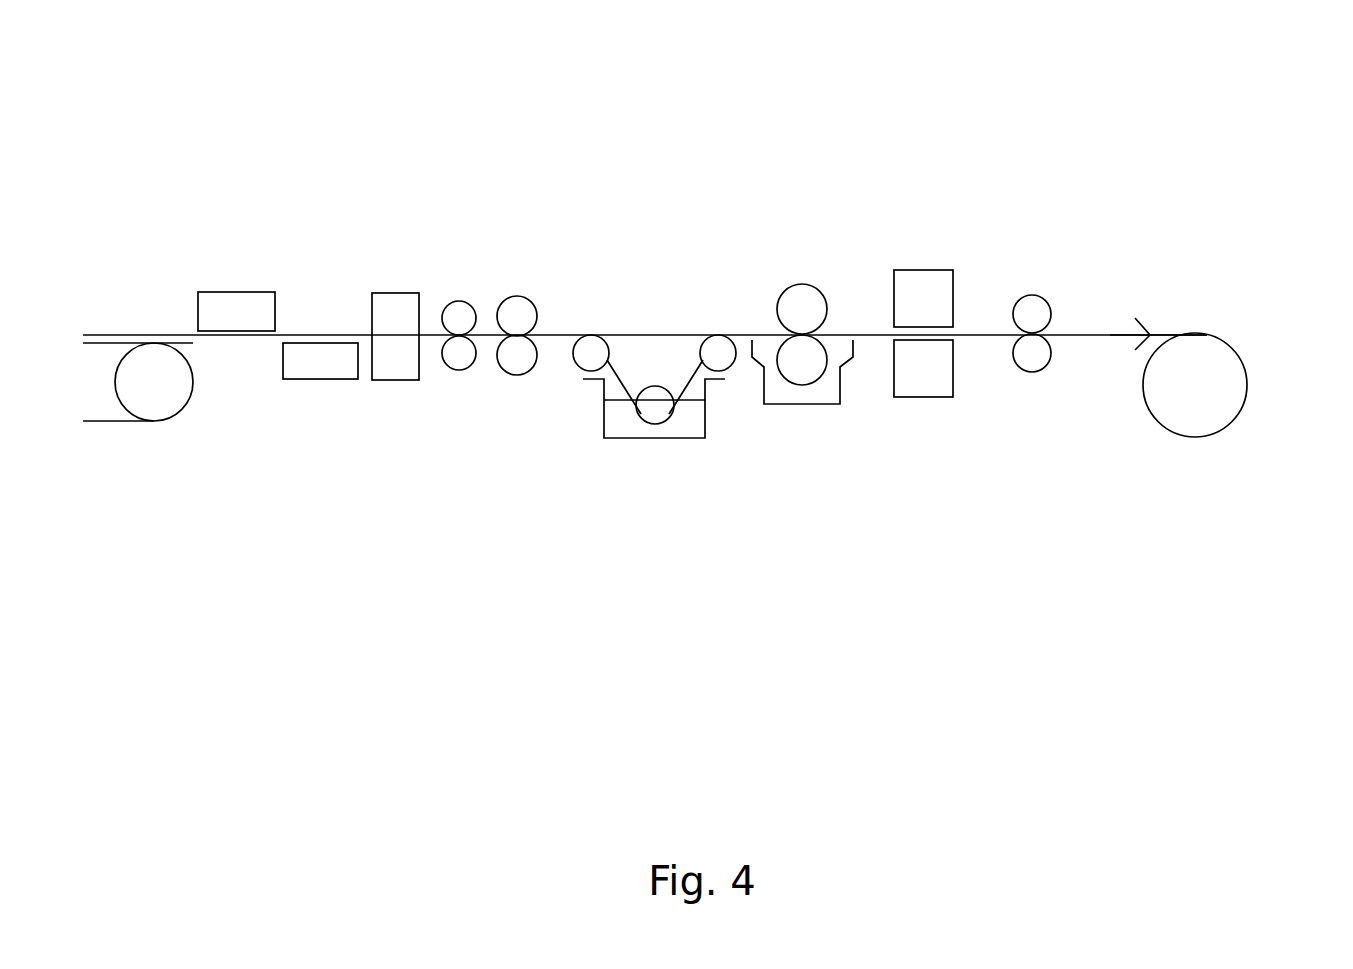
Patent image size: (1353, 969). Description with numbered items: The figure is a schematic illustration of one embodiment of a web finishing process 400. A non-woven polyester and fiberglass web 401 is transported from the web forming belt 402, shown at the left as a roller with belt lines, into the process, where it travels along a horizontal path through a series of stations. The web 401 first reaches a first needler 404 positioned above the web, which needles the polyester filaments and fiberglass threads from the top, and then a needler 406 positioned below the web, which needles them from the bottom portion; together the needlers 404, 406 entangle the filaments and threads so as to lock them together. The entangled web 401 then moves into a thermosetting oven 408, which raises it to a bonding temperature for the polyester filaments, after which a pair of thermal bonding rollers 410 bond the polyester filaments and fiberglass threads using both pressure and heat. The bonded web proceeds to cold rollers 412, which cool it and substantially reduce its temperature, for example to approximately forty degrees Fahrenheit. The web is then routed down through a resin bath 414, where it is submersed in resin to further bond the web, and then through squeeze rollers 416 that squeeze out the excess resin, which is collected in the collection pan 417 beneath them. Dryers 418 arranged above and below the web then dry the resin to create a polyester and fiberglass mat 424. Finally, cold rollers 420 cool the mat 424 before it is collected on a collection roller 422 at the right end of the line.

The web finishing process 400 is at (320, 665).
The non-woven polyester and fiberglass web 401 is at (133, 335).
The web forming belt 402 is at (110, 423).
The first needler 404 is at (235, 300).
The needler 406 is at (317, 368).
The thermosetting oven 408 is at (397, 305).
The thermal bonding rollers 410 is at (453, 378).
The cold rollers 412 is at (527, 288).
The resin bath 414 is at (623, 417).
The squeeze rollers 416 is at (810, 278).
The collection pan 417 is at (808, 405).
The dryers 418 is at (920, 260).
The cold rollers 420 is at (1033, 380).
The collection roller 422 is at (1237, 415).
The polyester and fiberglass mat 424 is at (1110, 334).